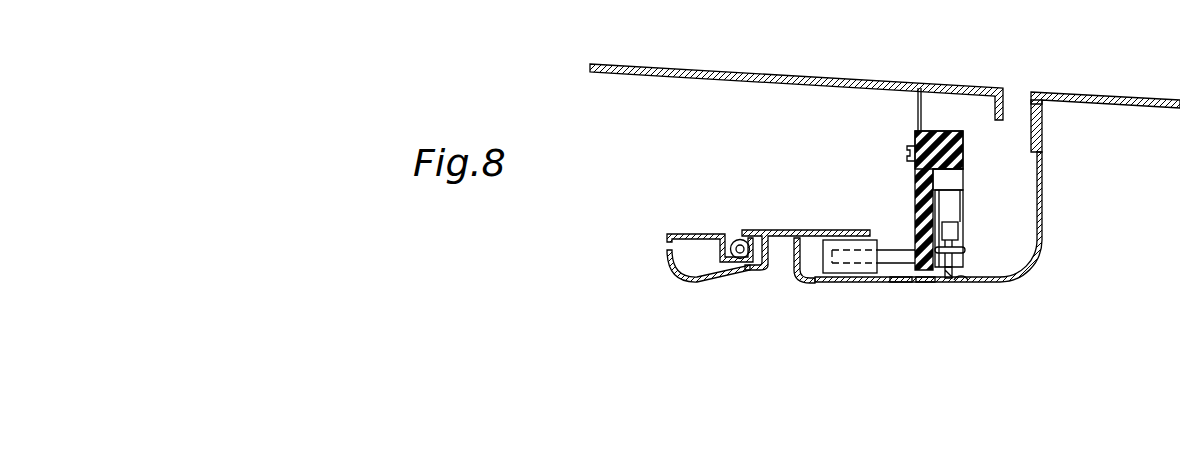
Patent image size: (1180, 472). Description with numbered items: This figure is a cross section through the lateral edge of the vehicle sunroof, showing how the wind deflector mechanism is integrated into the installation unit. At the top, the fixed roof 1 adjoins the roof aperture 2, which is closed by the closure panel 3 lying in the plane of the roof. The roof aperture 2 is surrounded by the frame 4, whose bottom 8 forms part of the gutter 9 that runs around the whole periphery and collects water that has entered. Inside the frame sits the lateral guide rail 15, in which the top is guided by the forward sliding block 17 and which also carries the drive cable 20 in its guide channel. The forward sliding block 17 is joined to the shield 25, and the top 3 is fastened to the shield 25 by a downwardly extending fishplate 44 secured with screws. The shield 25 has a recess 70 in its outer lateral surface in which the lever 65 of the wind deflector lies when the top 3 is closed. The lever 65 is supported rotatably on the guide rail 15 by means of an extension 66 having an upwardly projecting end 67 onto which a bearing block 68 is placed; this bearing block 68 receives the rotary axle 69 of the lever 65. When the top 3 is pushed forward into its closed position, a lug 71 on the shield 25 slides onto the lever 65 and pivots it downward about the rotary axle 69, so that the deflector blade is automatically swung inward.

The roof 1 is at (1126, 95).
The roof aperture 2 is at (1032, 108).
The closure panel 3 is at (756, 74).
The frame 4 is at (1046, 209).
The bottom 8 is at (925, 283).
The gutter 9 is at (997, 270).
The guide rail 15 is at (716, 232).
The forward sliding block 17 is at (846, 275).
The drive cable 20 is at (740, 262).
The shield 25 is at (956, 149).
The fishplate 44 is at (913, 107).
The lever 65 is at (956, 207).
The extension 66 is at (902, 283).
The upwardly projecting end 67 is at (960, 284).
The bearing block 68 is at (960, 245).
The rotary axle 69 is at (941, 247).
The recess 70 is at (934, 206).
The lug 71 is at (958, 181).